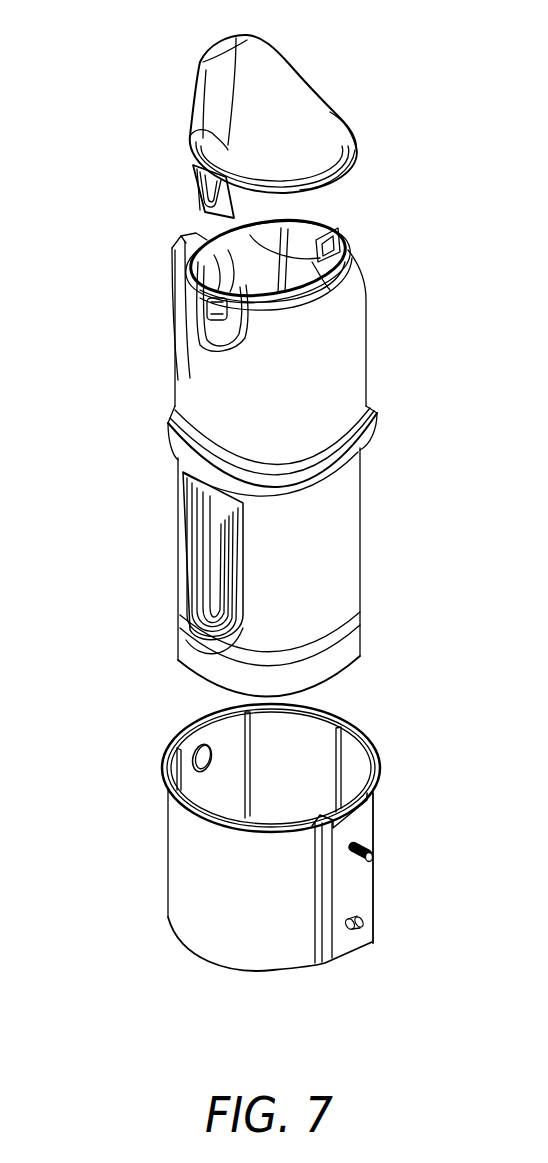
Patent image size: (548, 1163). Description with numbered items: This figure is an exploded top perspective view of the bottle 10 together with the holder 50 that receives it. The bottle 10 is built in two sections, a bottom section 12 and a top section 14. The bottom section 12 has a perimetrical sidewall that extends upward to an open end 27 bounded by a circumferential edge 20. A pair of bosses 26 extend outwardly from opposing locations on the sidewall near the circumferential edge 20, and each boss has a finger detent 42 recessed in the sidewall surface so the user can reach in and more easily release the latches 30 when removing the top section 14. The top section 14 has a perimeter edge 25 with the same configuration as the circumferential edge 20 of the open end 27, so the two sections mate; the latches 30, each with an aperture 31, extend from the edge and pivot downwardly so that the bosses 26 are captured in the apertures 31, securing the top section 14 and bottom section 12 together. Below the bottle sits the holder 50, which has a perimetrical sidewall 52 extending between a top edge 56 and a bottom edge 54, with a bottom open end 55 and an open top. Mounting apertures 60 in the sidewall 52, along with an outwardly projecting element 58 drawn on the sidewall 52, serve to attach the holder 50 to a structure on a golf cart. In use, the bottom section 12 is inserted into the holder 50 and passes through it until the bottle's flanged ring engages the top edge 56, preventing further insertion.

The bottle 10 is at (401, 80).
The bottom section 12 is at (365, 480).
The top section 14 is at (203, 62).
The circumferential edge 20 is at (356, 276).
The perimeter edge 25 is at (355, 146).
The bosses 26 is at (207, 311).
The open end 27 is at (293, 247).
The latches 30 is at (203, 208).
The apertures 31 is at (210, 188).
The finger detents 42 is at (207, 347).
The holder 50 is at (134, 942).
The perimetrical sidewall 52 is at (182, 852).
The bottom edge 54 is at (355, 953).
The bottom open end 55 is at (320, 752).
The top edge 56 is at (340, 712).
The locking pin 58 is at (372, 856).
The mounting apertures 60 is at (187, 752).